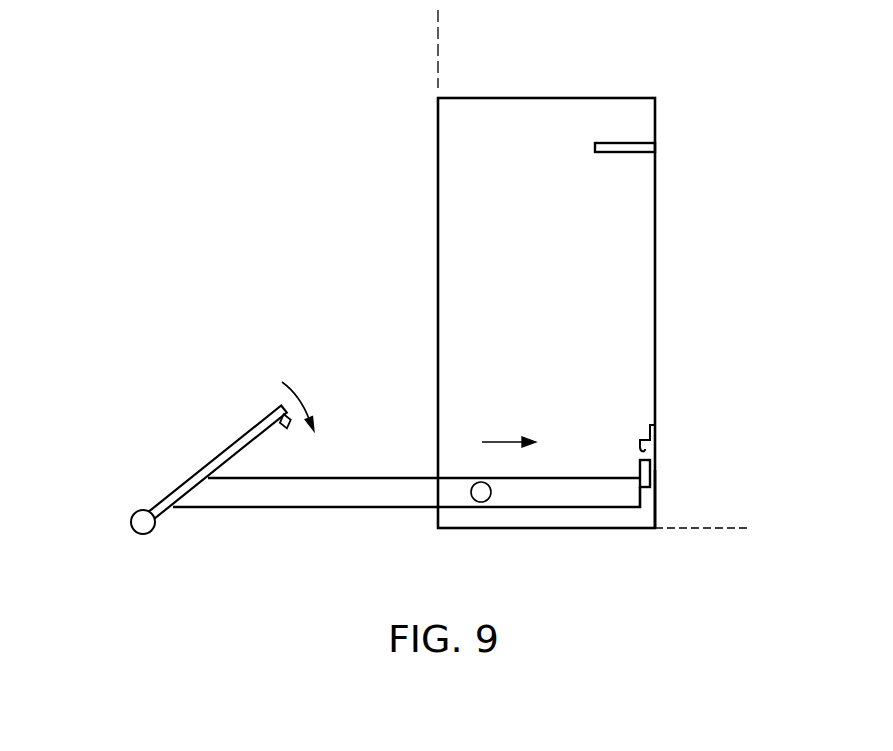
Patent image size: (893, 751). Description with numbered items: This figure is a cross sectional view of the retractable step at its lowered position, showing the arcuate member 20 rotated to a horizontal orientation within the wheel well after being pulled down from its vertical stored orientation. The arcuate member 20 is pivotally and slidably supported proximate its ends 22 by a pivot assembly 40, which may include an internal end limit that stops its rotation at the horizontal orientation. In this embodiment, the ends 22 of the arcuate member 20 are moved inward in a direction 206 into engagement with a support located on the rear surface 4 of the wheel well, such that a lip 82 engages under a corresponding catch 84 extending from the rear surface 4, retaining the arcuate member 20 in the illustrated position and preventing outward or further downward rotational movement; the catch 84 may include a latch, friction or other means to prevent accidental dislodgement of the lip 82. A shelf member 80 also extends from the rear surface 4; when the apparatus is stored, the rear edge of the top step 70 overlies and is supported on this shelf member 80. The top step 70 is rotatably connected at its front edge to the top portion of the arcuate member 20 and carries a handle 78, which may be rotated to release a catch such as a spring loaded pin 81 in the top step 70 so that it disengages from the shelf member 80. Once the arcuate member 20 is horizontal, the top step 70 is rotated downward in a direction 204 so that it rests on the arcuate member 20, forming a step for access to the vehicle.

The rear surface 4 is at (655, 275).
The arcuate member 20 is at (392, 478).
The ends 22 is at (655, 492).
The pivot assembly 40 is at (483, 502).
The top step 70 is at (239, 448).
The handle 78 is at (131, 522).
The shelf member 80 is at (627, 153).
The spring loaded pin 81 is at (290, 428).
The lip 82 is at (655, 464).
The catch 84 is at (642, 426).
The direction of top step rotation 204 is at (306, 390).
The inward direction 206 is at (506, 440).